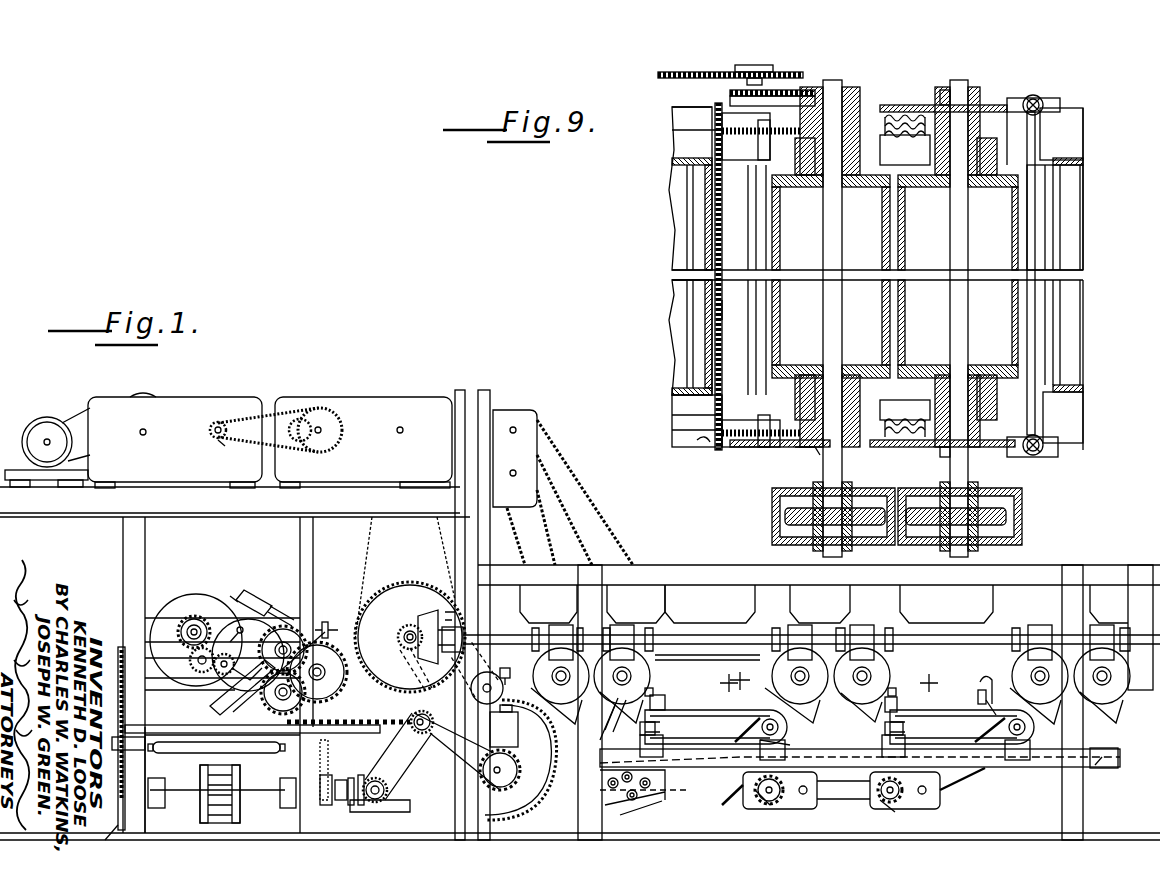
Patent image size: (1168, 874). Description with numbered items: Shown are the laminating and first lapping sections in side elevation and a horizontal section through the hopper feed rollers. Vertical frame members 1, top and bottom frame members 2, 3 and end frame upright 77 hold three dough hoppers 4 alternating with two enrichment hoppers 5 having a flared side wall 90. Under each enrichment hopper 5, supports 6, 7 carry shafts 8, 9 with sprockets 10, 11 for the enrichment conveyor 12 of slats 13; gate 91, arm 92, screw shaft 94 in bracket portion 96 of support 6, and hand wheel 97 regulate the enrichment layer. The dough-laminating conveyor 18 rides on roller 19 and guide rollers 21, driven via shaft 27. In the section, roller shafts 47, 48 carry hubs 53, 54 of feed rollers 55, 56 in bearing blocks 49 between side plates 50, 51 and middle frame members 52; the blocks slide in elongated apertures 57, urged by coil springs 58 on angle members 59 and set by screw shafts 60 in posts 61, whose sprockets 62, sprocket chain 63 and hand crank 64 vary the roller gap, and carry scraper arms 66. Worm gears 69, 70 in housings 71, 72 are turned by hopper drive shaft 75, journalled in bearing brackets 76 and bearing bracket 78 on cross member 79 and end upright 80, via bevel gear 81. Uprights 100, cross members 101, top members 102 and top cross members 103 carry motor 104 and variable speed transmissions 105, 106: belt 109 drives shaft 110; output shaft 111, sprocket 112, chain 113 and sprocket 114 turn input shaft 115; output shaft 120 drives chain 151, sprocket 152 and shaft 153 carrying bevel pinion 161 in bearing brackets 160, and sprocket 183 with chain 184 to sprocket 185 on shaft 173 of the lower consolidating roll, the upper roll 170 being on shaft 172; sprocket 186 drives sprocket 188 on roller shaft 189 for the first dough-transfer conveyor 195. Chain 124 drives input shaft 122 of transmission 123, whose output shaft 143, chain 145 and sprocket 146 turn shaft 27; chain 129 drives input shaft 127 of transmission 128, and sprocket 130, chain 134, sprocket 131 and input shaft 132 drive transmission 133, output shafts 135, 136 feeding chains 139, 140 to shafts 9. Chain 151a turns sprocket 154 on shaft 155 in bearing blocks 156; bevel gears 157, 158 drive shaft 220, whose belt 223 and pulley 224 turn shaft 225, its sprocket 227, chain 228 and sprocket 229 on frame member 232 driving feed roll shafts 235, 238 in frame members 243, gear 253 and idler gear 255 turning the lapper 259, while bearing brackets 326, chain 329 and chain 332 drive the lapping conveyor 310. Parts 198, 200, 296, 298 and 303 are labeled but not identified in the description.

In FIG. 1, the vertical frame members 1 is at (1080, 822).
In FIG. 1, the longitudinal top frame member 2 is at (1102, 565).
In FIG. 1, the longitudinal bottom frame member 3 is at (1052, 768).
In FIG. 1, the dough hopper 4 is at (1110, 595).
In FIG. 1, the enrichment hopper 5 is at (705, 605).
In FIG. 1, the support 6 is at (772, 748).
In FIG. 1, the support 7 is at (895, 752).
In FIG. 1, the shaft 8 is at (884, 730).
In FIG. 1, the shaft 9 is at (1038, 730).
In FIG. 1, the sprocket 10 is at (790, 728).
In FIG. 1, the sprocket 11 is at (866, 730).
In FIG. 1, the endless enrichment conveyor 12 is at (708, 722).
In FIG. 9, the slats 13 is at (680, 362).
In FIG. 1, the slats 13 is at (698, 712).
In FIG. 1, the dough-laminating conveyor 18 is at (1098, 748).
In FIG. 1, the roller 19 is at (1097, 768).
In FIG. 1, the guide rollers 21 is at (735, 765).
In FIG. 1, the shaft 27 is at (639, 786).
In FIG. 9, the roller shaft 47 is at (830, 294).
In FIG. 1, the roller shaft 47 is at (560, 674).
In FIG. 9, the roller shaft 48 is at (957, 294).
In FIG. 1, the roller shaft 48 is at (622, 674).
In FIG. 9, the bearing blocks 49 is at (862, 80).
In FIG. 9, the side plate 50 is at (770, 447).
In FIG. 1, the side plate 50 is at (796, 674).
In FIG. 9, the side plate 51 is at (935, 100).
In FIG. 1, the side plate 51 is at (862, 673).
In FIG. 1, the middle longitudinal frame members 52 is at (680, 695).
In FIG. 9, the hub 53 is at (815, 365).
In FIG. 9, the hub 54 is at (972, 190).
In FIG. 9, the hopper feed roller 55 is at (884, 255).
In FIG. 9, the hopper feed roller 56 is at (905, 255).
In FIG. 9, the elongated apertures 57 is at (812, 445).
In FIG. 9, the coil springs 58 is at (900, 108).
In FIG. 9, the angle members 59 is at (905, 278).
In FIG. 9, the screw shafts 60 is at (740, 128).
In FIG. 1, the screw shafts 60 is at (981, 700).
In FIG. 9, the posts 61 is at (760, 128).
In FIG. 9, the sprockets 62 is at (716, 110).
In FIG. 9, the sprocket chain 63 is at (720, 360).
In FIG. 1, the sprocket chain 63 is at (985, 690).
In FIG. 9, the hand crank 64 is at (700, 450).
In FIG. 1, the hand crank 64 is at (986, 678).
In FIG. 9, the scraper arms 66 is at (797, 143).
In FIG. 9, the worm gear 69 is at (785, 515).
In FIG. 9, the worm gear 70 is at (1010, 515).
In FIG. 9, the housing 71 is at (775, 535).
In FIG. 1, the housing 71 is at (809, 674).
In FIG. 9, the housing 72 is at (1022, 525).
In FIG. 1, the housing 72 is at (871, 674).
In FIG. 1, the hopper drive shaft 75 is at (708, 632).
In FIG. 1, the bearing brackets 76 is at (588, 628).
In FIG. 1, the end frame upright 77 is at (1142, 568).
In FIG. 1, the bearing bracket 78 is at (465, 638).
In FIG. 1, the frame cross member 79 is at (450, 618).
In FIG. 1, the frame end upright 80 is at (478, 566).
In FIG. 1, the bevel gear 81 is at (432, 620).
In FIG. 1, the outwardly flared side wall 90 is at (762, 685).
In FIG. 9, the gate 91 is at (1046, 395).
In FIG. 1, the gate 91 is at (665, 702).
In FIG. 9, the arm 92 is at (1040, 150).
In FIG. 9, the screw shaft 94 is at (1030, 458).
In FIG. 1, the bracket portion 96 is at (622, 711).
In FIG. 9, the hand wheel 97 is at (1045, 100).
In FIG. 1, the hand wheel 97 is at (655, 692).
In FIG. 1, the vertical uprights 100 is at (140, 550).
In FIG. 1, the cross members 101 is at (165, 820).
In FIG. 1, the top members 102 is at (235, 525).
In FIG. 1, the top cross members 103 is at (30, 488).
In FIG. 1, the main driving motor 104 is at (33, 425).
In FIG. 1, the variable speed transmission 105 is at (228, 402).
In FIG. 1, the variable speed transmission 106 is at (400, 402).
In FIG. 1, the belt 109 is at (75, 414).
In FIG. 1, the shaft 110 is at (155, 418).
In FIG. 1, the out-put shaft 111 is at (210, 428).
In FIG. 1, the sprocket 112 is at (214, 451).
In FIG. 1, the sprocket chain 113 is at (268, 412).
In FIG. 1, the sprocket 114 is at (330, 418).
In FIG. 1, the in-put shaft 115 is at (321, 430).
In FIG. 1, the output shaft 120 is at (403, 428).
In FIG. 1, the in-put shaft 122 is at (515, 420).
In FIG. 1, the variable speed transmission 123 is at (538, 425).
In FIG. 1, the sprocket chain 124 is at (460, 390).
In FIG. 1, the in-put shaft 127 is at (760, 796).
In FIG. 1, the enrichment conveyor variable speed transmission 128 is at (752, 808).
In FIG. 1, the sprocket chain 129 is at (618, 548).
In FIG. 1, the sprocket 130 is at (655, 790).
In FIG. 1, the sprocket 131 is at (888, 803).
In FIG. 1, the in-put shaft 132 is at (907, 816).
In FIG. 1, the enrichment conveyor variable speed transmission 133 is at (935, 810).
In FIG. 1, the sprocket chain 134 is at (830, 808).
In FIG. 1, the out-put shaft 135 is at (803, 795).
In FIG. 1, the out-put shaft 136 is at (928, 790).
In FIG. 1, the sprocket chain 139 is at (791, 742).
In FIG. 1, the sprocket chain 140 is at (969, 781).
In FIG. 1, the out-put shaft 143 is at (514, 477).
In FIG. 1, the sprocket chain 145 is at (520, 530).
In FIG. 1, the sprocket 146 is at (612, 808).
In FIG. 1, the sprocket chain 151 is at (370, 550).
In FIG. 1, the chain 151a is at (418, 582).
In FIG. 1, the sprocket 152 is at (405, 590).
In FIG. 1, the shaft 153 is at (400, 635).
In FIG. 1, the sprocket 154 is at (400, 783).
In FIG. 1, the shaft 155 is at (370, 800).
In FIG. 1, the bearing blocks 156 is at (395, 803).
In FIG. 1, the bevel gear 157 is at (380, 782).
In FIG. 1, the bevel gear 158 is at (358, 775).
In FIG. 1, the bearing brackets 160 is at (438, 600).
In FIG. 1, the bevel pinion 161 is at (403, 645).
In FIG. 1, the upper consolidating roll 170 is at (525, 725).
In FIG. 1, the shaft 172 is at (500, 725).
In FIG. 1, the shaft 173 is at (500, 769).
In FIG. 1, the sprocket 183 is at (425, 660).
In FIG. 1, the sprocket chain 184 is at (536, 790).
In FIG. 1, the sprocket 185 is at (528, 805).
In FIG. 1, the sprocket 186 is at (445, 740).
In FIG. 1, the sprocket 188 is at (432, 745).
In FIG. 1, the roller shaft 189 is at (420, 732).
In FIG. 1, the first dough-transfer conveyor 195 is at (296, 658).
In FIG. 1, the cylinder 198 is at (252, 600).
In FIG. 1, the rod 200 is at (252, 618).
In FIG. 1, the shaft 220 is at (330, 785).
In FIG. 1, the belt 223 is at (230, 772).
In FIG. 1, the pulley 224 is at (217, 779).
In FIG. 1, the shaft 225 is at (155, 792).
In FIG. 1, the sprocket 227 is at (109, 838).
In FIG. 1, the sprocket chain 228 is at (122, 672).
In FIG. 1, the sprocket 229 is at (123, 648).
In FIG. 1, the longitudinal frame member 232 is at (157, 680).
In FIG. 1, the feed roll shaft 235 is at (180, 632).
In FIG. 1, the feed roll shaft 238 is at (248, 629).
In FIG. 1, the longitudinal frame members 243 is at (155, 612).
In FIG. 1, the gear 253 is at (218, 588).
In FIG. 1, the idler gear 255 is at (190, 660).
In FIG. 1, the lapper 259 is at (215, 693).
In FIG. 1, the link 296 is at (228, 708).
In FIG. 1, the gear 298 is at (348, 682).
In FIG. 1, the gear 303 is at (297, 628).
In FIG. 1, the lapping conveyor 310 is at (176, 750).
In FIG. 1, the bearing brackets 326 is at (288, 780).
In FIG. 1, the sprocket chain 329 is at (330, 768).
In FIG. 1, the sprocket chain 332 is at (125, 700).